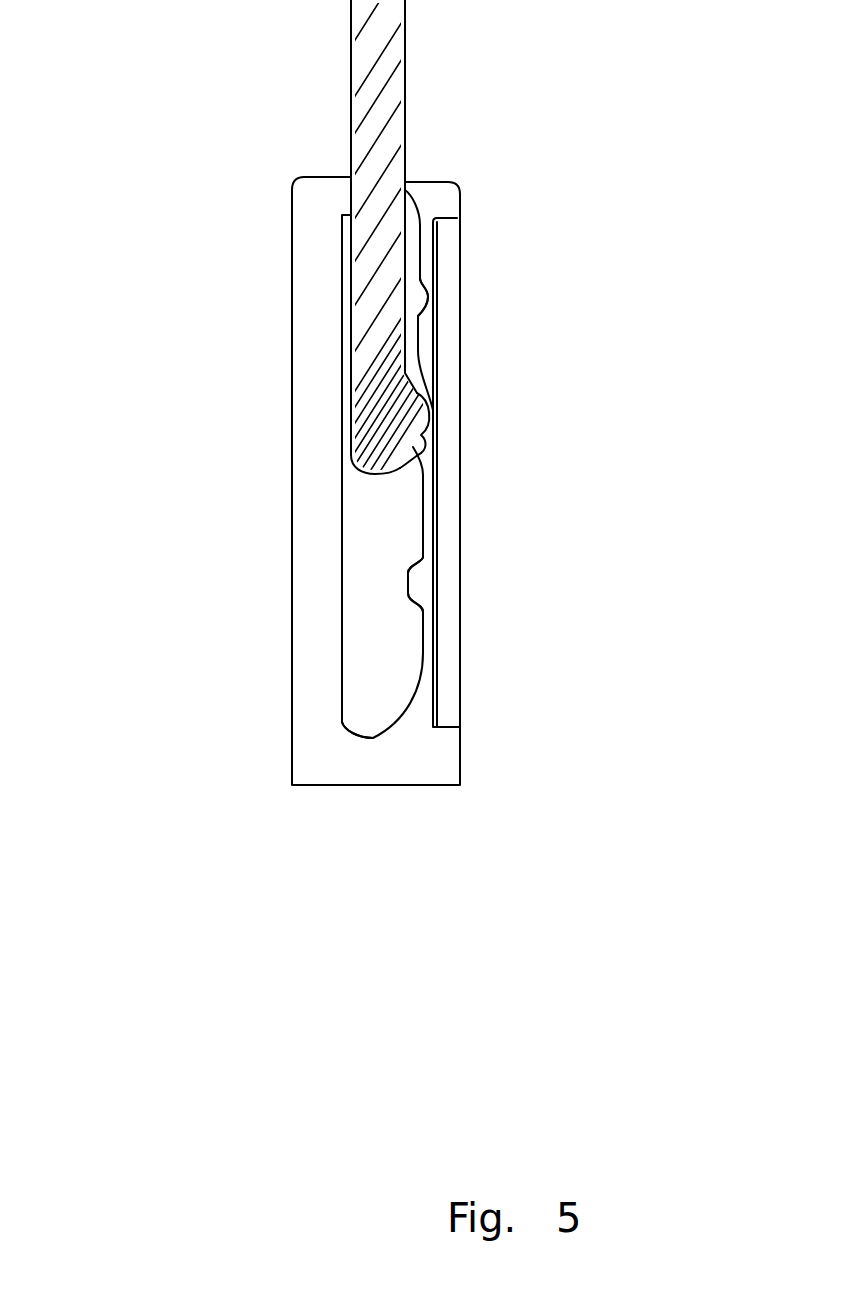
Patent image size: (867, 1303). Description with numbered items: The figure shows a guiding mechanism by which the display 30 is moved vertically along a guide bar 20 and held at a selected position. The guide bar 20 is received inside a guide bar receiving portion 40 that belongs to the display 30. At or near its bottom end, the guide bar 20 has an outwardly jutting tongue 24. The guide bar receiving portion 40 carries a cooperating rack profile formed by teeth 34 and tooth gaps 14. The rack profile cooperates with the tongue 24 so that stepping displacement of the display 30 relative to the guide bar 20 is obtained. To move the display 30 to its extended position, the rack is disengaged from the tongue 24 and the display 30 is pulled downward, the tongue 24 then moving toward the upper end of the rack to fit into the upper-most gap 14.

The tooth gap 14 is at (425, 523).
The guide bar 20 is at (397, 90).
The outwardly jutting tongue 24 is at (429, 411).
The display 30 is at (422, 765).
The teeth 34 is at (407, 450).
The guide bar receiving portion 40 is at (381, 529).